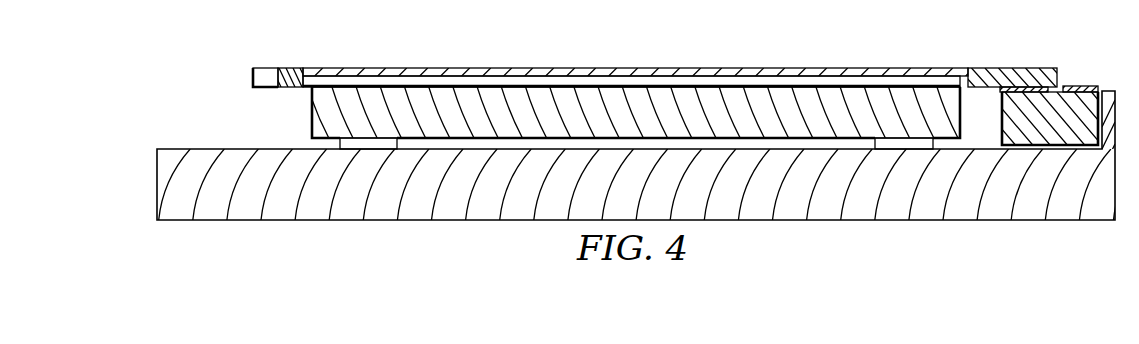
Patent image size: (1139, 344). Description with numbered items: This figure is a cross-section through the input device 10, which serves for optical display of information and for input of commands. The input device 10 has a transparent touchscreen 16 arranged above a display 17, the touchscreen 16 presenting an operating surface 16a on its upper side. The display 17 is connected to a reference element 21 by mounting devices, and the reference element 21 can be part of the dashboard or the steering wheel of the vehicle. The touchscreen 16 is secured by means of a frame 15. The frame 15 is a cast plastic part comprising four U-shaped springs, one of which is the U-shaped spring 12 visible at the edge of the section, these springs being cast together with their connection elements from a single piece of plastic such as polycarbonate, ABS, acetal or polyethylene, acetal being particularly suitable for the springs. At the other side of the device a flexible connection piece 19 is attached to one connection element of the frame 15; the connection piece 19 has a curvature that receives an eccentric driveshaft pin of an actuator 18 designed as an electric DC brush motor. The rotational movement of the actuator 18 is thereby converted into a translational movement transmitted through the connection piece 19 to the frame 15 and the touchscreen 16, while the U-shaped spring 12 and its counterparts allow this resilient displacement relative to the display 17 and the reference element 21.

The input device 10 is at (157, 66).
The U-shaped spring 12 is at (253, 75).
The frame 15 is at (290, 75).
The touchscreen 16 is at (620, 82).
The operating surface 16a is at (542, 73).
The display 17 is at (316, 107).
The actuator 18 is at (1070, 95).
The connection piece 19 is at (1010, 74).
The reference element 21 is at (162, 190).